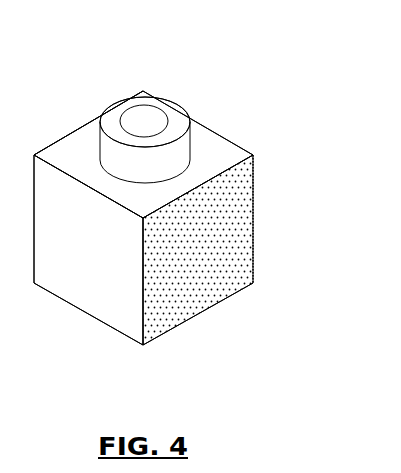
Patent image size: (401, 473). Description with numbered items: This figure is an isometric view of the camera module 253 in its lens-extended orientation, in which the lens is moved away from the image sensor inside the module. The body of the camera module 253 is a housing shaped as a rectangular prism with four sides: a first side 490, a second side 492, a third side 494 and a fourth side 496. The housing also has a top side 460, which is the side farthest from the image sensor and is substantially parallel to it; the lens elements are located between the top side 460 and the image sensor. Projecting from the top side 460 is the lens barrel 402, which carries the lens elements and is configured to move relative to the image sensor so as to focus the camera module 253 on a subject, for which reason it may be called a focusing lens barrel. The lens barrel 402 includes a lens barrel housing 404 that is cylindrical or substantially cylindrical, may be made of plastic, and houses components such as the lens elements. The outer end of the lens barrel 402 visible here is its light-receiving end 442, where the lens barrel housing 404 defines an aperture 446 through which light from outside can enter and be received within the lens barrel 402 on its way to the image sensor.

The camera module 253 is at (203, 204).
The lens barrel 402 is at (183, 135).
The lens barrel housing 404 is at (253, 208).
The light-receiving end 442 is at (107, 120).
The aperture 446 is at (155, 122).
The top side 460 is at (203, 156).
The first side 490 is at (54, 140).
The second side 492 is at (150, 92).
The third side 494 is at (240, 258).
The fourth side 496 is at (72, 282).